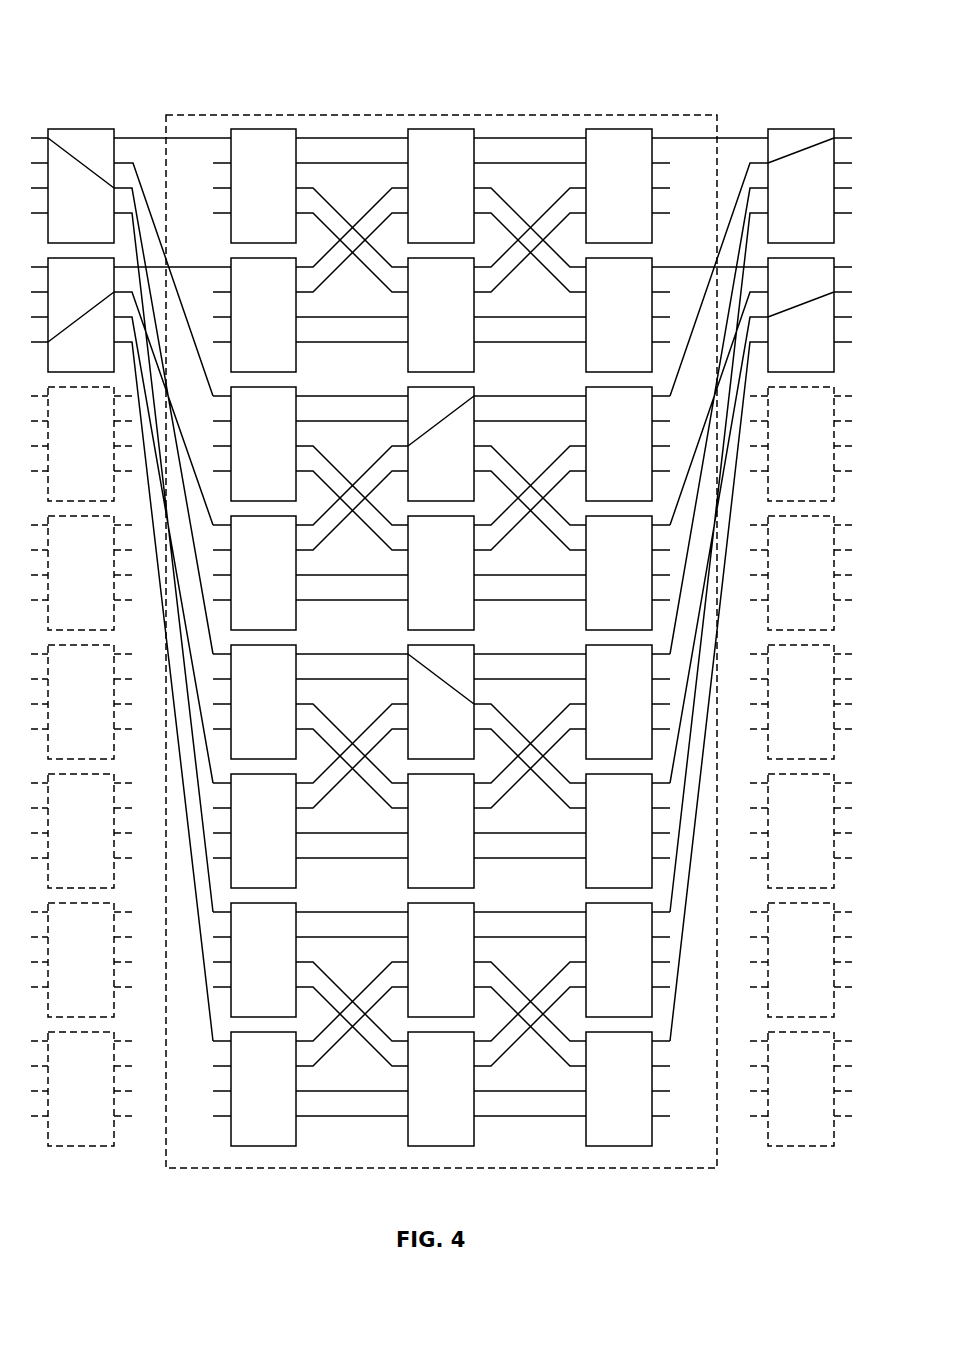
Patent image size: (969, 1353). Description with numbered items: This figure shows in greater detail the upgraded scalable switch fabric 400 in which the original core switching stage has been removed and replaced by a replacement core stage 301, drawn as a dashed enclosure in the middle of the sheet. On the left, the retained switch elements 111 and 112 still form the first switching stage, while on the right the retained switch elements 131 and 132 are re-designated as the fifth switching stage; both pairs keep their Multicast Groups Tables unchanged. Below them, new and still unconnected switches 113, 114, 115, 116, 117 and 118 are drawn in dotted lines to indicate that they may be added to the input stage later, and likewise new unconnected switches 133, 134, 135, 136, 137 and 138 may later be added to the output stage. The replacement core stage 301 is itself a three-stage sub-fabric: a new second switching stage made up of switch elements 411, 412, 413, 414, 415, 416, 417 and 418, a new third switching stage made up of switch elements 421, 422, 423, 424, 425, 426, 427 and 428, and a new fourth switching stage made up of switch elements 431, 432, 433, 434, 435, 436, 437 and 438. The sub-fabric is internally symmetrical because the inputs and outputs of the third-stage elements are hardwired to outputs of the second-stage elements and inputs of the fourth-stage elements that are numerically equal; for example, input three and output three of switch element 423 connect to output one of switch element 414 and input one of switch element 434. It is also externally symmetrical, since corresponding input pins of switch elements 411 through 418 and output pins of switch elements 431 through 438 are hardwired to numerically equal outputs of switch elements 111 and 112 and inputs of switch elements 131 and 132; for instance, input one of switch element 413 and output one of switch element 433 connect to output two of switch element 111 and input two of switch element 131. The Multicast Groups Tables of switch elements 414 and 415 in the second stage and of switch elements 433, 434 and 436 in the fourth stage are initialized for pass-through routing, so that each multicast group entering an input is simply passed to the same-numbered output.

The switching network 400 is at (174, 63).
The replacement core stage 301 is at (441, 115).
The switch element 111 is at (61, 234).
The switch element 112 is at (61, 363).
The switch 113 is at (61, 492).
The switch 114 is at (61, 621).
The switch 115 is at (61, 750).
The switch 116 is at (61, 879).
The switch 117 is at (61, 1008).
The switch 118 is at (61, 1137).
The switch element 131 is at (781, 234).
The switch element 132 is at (781, 363).
The switch 133 is at (781, 492).
The switch 134 is at (781, 621).
The switch 135 is at (781, 750).
The switch 136 is at (781, 879).
The switch 137 is at (781, 1008).
The switch 138 is at (781, 1137).
The switch element 411 is at (284, 234).
The switch element 412 is at (284, 363).
The switch element 413 is at (284, 492).
The switch element 414 is at (284, 621).
The switch element 415 is at (284, 750).
The switch element 416 is at (284, 879).
The switch element 417 is at (284, 1008).
The switch element 418 is at (284, 1137).
The switch element 421 is at (421, 234).
The switch element 422 is at (421, 363).
The switch element 423 is at (421, 492).
The switch element 424 is at (421, 621).
The switch element 425 is at (421, 750).
The switch element 426 is at (421, 879).
The switch element 427 is at (421, 1008).
The switch element 428 is at (421, 1137).
The switch element 431 is at (599, 234).
The switch element 432 is at (599, 363).
The switch element 433 is at (599, 492).
The switch element 434 is at (599, 621).
The switch element 435 is at (599, 750).
The switch element 436 is at (599, 879).
The switch element 437 is at (599, 1008).
The switch element 438 is at (599, 1137).